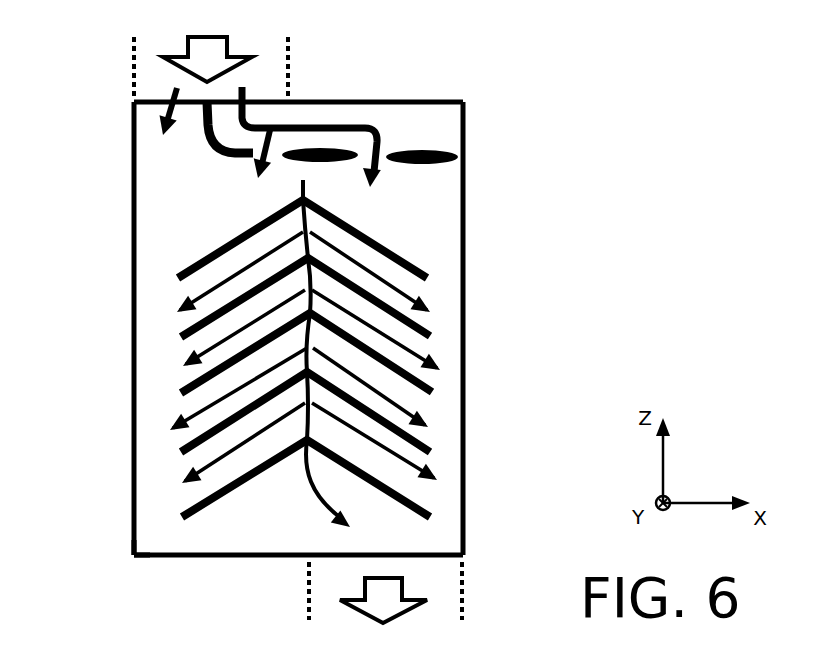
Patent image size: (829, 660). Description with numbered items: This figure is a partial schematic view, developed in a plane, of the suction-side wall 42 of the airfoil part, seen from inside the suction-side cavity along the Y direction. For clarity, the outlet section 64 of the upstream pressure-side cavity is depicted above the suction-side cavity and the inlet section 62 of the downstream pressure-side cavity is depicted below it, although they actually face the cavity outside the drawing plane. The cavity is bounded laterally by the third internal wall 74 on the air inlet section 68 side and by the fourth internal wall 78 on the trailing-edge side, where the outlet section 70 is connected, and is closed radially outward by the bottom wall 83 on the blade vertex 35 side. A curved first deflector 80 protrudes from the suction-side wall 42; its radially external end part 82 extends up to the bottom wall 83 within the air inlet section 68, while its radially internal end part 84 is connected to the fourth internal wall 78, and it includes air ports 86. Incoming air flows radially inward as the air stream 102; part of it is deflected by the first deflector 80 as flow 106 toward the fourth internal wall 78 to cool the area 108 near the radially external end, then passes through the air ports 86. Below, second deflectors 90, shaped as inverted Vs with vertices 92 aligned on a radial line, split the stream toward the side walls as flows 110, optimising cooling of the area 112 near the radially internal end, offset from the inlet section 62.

The blade vertex 35 is at (309, 84).
The bottom wall 83 is at (370, 108).
The suction-side wall 42 is at (440, 236).
The inlet section of the pressure-side cavity 62 is at (445, 593).
The outlet section of the pressure-side cavity 64 is at (153, 75).
The air inlet section of the suction-side cavity 68 is at (150, 130).
The outlet section of the suction-side cavity 70 is at (445, 530).
The third internal wall 74 is at (140, 355).
The fourth internal wall 78 is at (450, 373).
The first deflector 80 is at (220, 162).
The radially external end part 82 is at (207, 133).
The radially internal end part 84 is at (430, 163).
The air ports 86 is at (385, 152).
The second deflectors 90 is at (420, 327).
The vertex 92 is at (303, 197).
The air stream 102 is at (230, 368).
The deflected air flow 106 is at (312, 130).
The area near radially external end 108 is at (450, 117).
The deflected air flows toward side walls 110 is at (212, 460).
The area near radially internal end 112 is at (146, 542).